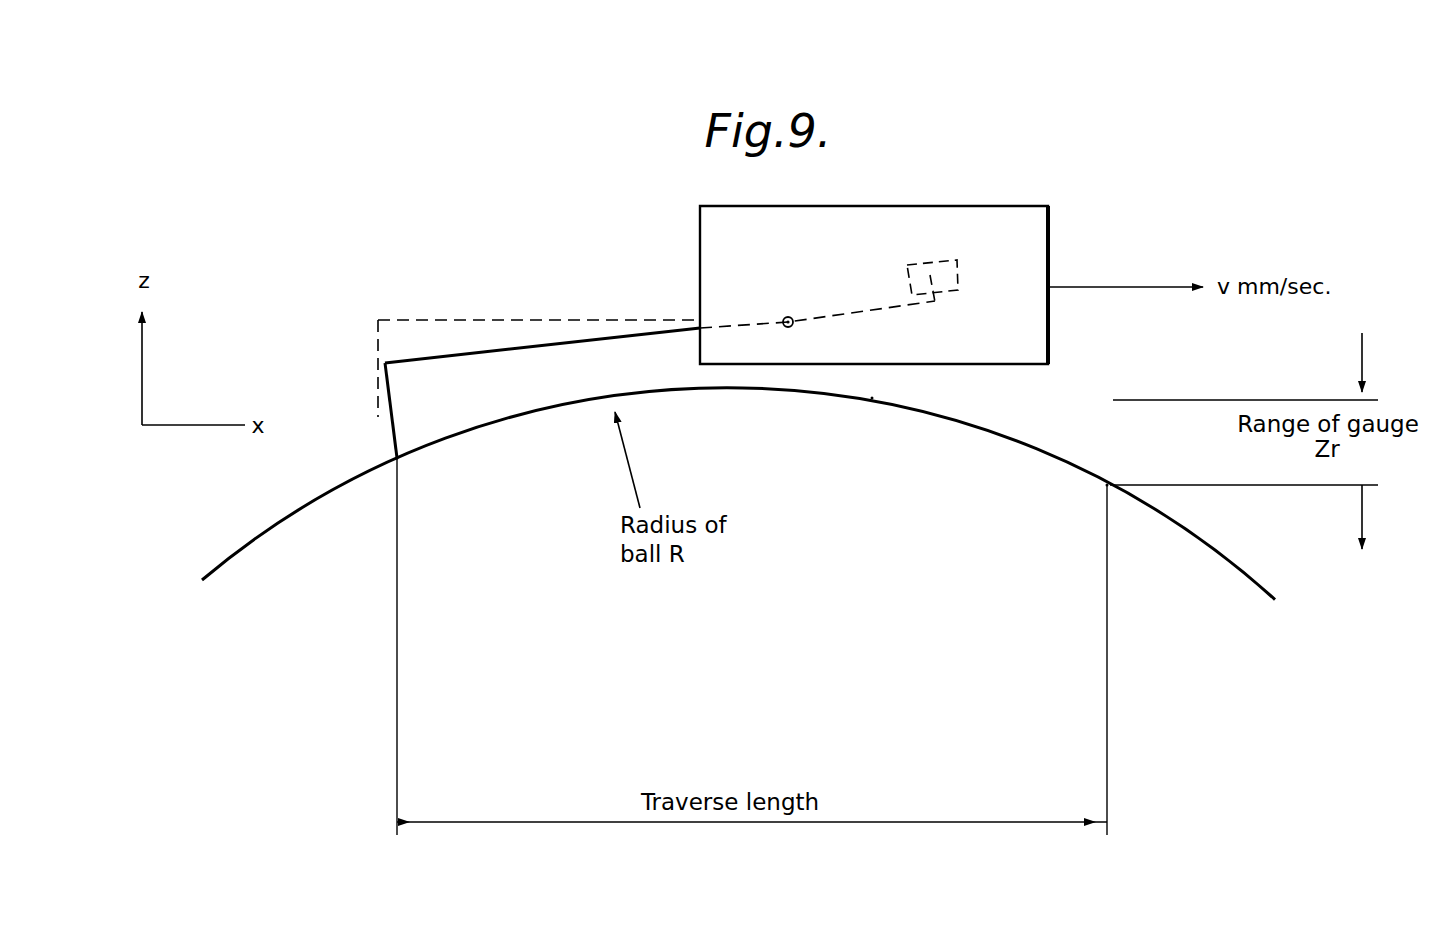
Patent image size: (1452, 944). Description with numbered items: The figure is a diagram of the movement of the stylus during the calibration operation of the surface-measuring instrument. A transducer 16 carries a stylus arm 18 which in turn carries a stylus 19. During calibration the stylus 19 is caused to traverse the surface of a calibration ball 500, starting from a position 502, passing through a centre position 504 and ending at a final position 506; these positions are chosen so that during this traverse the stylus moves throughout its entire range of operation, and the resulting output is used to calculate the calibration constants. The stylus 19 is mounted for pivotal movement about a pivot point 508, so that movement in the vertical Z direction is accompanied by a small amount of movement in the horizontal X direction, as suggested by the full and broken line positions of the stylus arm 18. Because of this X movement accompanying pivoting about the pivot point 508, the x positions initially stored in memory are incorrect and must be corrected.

The transducer 16 is at (957, 263).
The stylus arm 18 is at (555, 343).
The stylus 19 is at (387, 408).
The calibration ball 500 is at (283, 522).
The position 502 is at (395, 457).
The centre position 504 is at (872, 398).
The final position 506 is at (1110, 482).
The pivot point 508 is at (803, 285).